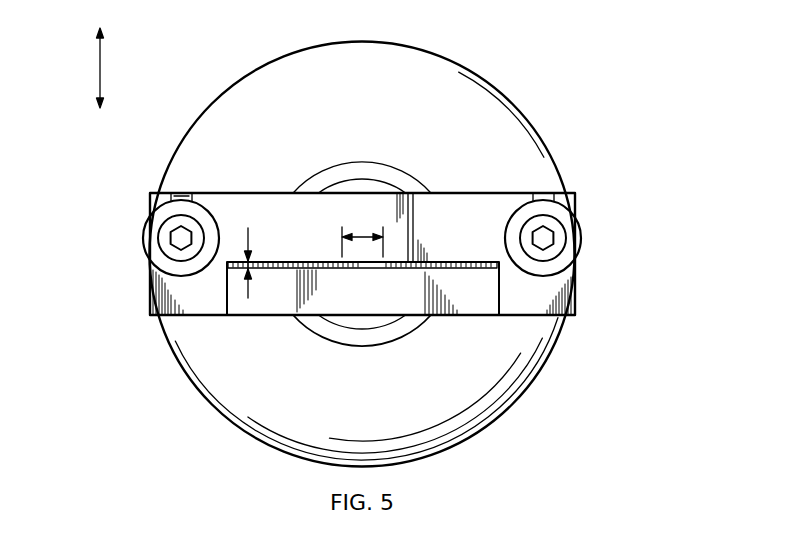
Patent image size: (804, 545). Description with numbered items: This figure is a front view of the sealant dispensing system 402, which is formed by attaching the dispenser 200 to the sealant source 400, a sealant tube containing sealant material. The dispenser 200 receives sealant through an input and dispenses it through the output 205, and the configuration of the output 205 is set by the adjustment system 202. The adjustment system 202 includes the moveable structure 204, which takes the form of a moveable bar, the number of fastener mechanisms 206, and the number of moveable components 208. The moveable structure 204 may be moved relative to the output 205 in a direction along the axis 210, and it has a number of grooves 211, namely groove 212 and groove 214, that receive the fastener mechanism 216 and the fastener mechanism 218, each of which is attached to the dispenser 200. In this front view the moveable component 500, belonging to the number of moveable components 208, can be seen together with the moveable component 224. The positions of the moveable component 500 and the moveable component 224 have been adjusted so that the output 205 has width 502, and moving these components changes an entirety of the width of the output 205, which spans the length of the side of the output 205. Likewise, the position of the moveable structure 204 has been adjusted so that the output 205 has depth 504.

The dispenser 200 is at (276, 191).
The adjustment system 202 is at (488, 208).
The moveable structure 204 is at (438, 203).
The output 205 is at (360, 271).
The number of fastener mechanisms 206 is at (133, 250).
The number of moveable components 208 is at (403, 271).
The axis 210 is at (93, 66).
The number of grooves 211 is at (162, 191).
The groove 212 is at (180, 190).
The groove 214 is at (549, 190).
The fastener mechanism 216 is at (140, 230).
The fastener mechanism 218 is at (589, 232).
The moveable component 224 is at (465, 270).
The sealant source 400 is at (434, 57).
The sealant dispensing system 402 is at (508, 64).
The moveable component 500 is at (279, 269).
The width 502 is at (358, 237).
The depth 504 is at (250, 245).